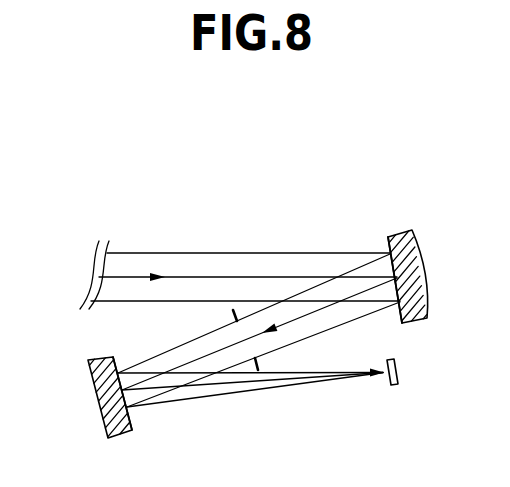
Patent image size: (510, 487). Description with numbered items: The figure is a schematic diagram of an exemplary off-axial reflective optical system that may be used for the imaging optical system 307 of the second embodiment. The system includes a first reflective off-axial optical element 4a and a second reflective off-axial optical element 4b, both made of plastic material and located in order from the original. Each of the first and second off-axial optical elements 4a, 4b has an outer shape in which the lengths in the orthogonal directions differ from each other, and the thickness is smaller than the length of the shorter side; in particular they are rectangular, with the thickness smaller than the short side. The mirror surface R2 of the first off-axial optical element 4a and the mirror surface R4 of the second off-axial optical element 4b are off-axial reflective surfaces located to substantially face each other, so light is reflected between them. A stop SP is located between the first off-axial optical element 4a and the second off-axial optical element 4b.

The imaging optical system 307 is at (427, 160).
The first reflective off-axial optical element 4a is at (405, 232).
The second reflective off-axial optical element 4b is at (92, 359).
The mirror surface of first off-axial optical element R2 is at (384, 246).
The mirror surface of second off-axial optical element R4 is at (128, 418).
The stop SP is at (258, 360).